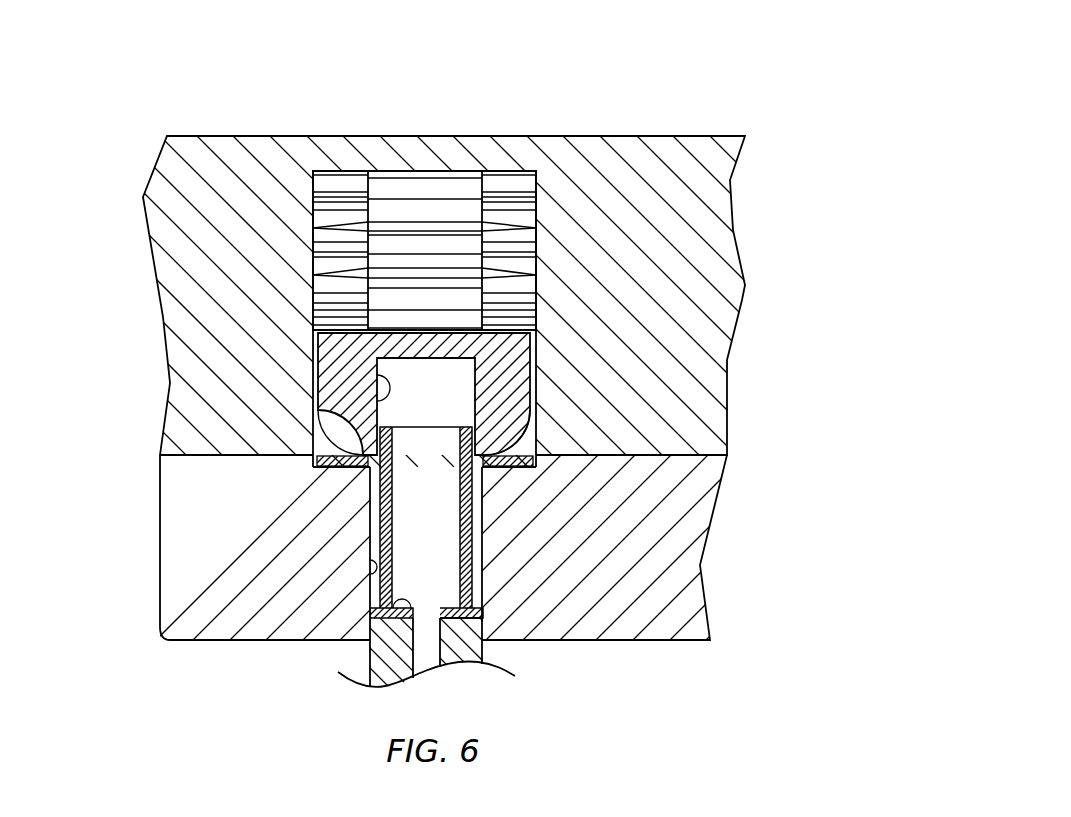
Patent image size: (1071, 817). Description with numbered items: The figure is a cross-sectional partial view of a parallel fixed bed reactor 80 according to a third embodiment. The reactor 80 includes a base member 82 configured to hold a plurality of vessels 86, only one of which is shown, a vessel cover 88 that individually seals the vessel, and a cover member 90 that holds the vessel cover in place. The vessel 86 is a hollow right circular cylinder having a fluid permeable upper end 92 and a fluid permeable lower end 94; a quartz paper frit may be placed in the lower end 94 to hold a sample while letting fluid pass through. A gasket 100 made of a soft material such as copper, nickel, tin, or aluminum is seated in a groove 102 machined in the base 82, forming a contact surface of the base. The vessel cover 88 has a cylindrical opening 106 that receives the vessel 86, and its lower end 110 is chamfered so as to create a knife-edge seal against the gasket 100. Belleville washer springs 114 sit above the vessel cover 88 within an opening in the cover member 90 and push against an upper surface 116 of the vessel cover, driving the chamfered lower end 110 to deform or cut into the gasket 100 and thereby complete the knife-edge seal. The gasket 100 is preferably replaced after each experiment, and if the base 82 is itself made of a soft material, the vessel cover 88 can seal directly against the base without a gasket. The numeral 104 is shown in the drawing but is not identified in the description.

The parallel fixed bed reactor 80 is at (632, 95).
The base member 82 is at (675, 568).
The vessel 86 is at (483, 597).
The vessel cover 88 is at (532, 352).
The cover member 90 is at (710, 227).
The upper end 92 is at (407, 427).
The lower end 94 is at (345, 638).
The gasket 100 is at (360, 437).
The groove 102 is at (532, 465).
The detent protrusion 104 is at (368, 563).
The cylindrical opening 106 is at (380, 376).
The lower end 110 is at (363, 442).
The Belleville washer springs 114 is at (403, 187).
The upper surface 116 is at (537, 320).